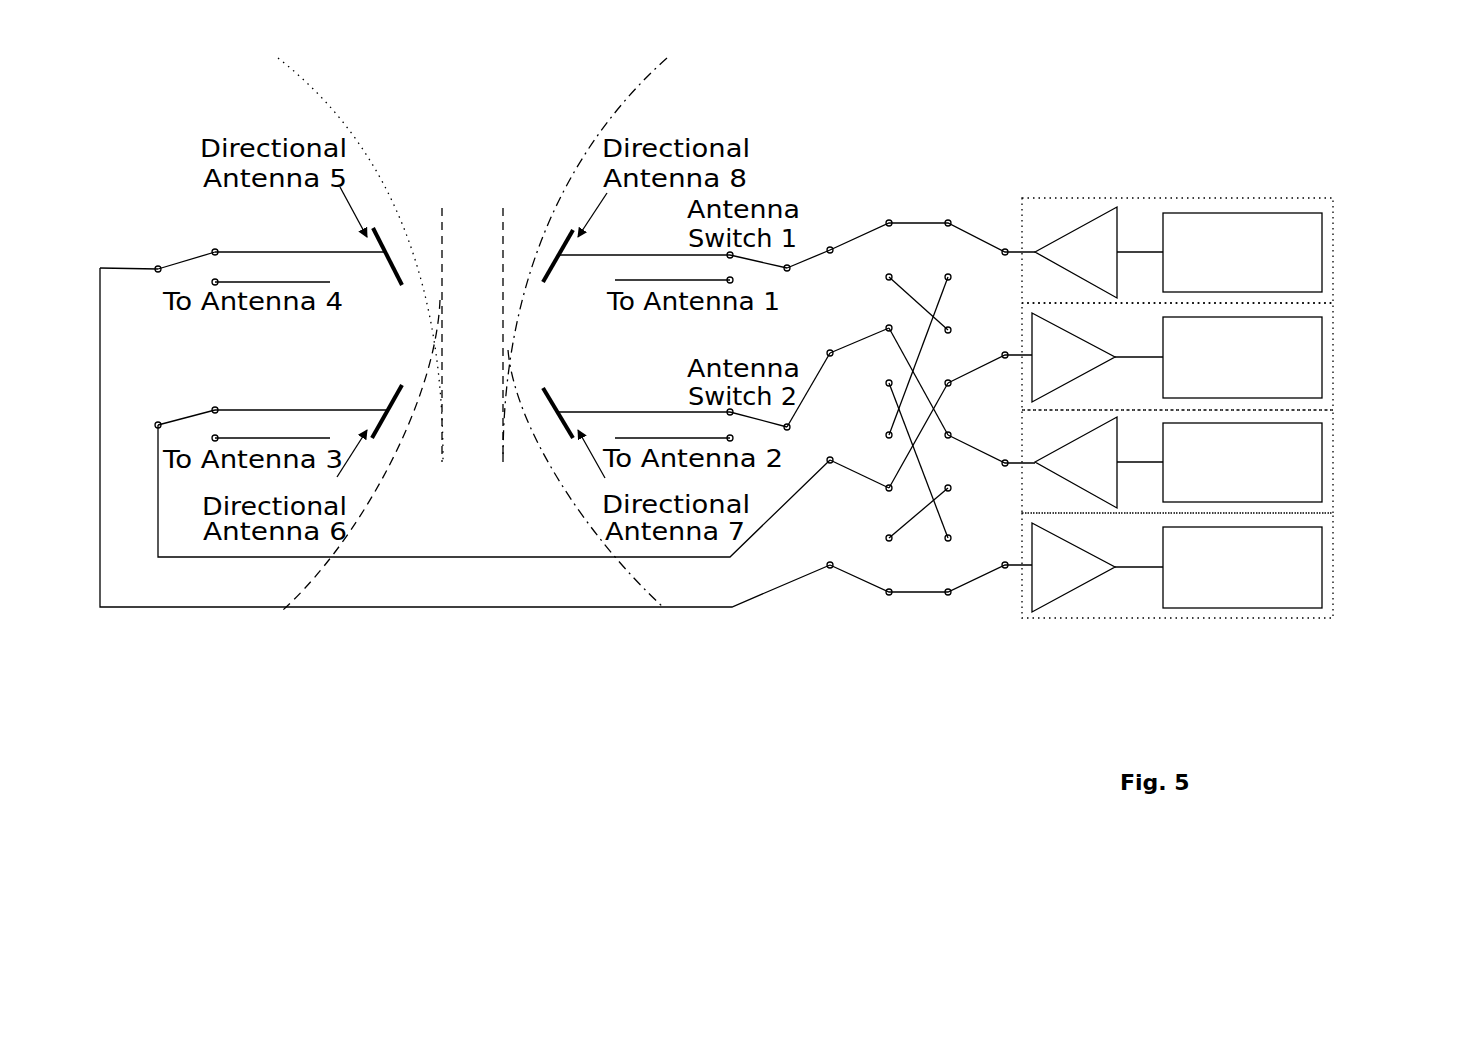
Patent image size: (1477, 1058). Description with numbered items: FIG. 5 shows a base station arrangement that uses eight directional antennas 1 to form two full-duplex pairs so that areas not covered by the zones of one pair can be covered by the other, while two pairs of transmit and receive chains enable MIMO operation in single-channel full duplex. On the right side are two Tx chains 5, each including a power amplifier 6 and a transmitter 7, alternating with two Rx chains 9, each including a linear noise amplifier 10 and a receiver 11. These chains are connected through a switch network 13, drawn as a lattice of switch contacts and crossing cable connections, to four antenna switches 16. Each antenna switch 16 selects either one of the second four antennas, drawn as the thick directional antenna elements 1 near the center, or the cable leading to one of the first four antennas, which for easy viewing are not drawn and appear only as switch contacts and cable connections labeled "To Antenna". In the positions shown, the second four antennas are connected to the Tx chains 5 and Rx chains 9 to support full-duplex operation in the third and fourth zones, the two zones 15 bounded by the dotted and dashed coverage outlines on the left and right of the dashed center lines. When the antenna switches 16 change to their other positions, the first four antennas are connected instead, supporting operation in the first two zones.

The antenna 1 is at (474, 335).
The Tx chain 5 is at (1244, 355).
The power amplifier 6 is at (1099, 357).
The transmitter 7 is at (1242, 357).
The Rx chain 9 is at (1246, 460).
The linear noise amplifier 10 is at (1097, 464).
The receiver 11 is at (1242, 462).
The switch network 13 is at (931, 439).
The zone 15 is at (472, 334).
The antenna switch 16 is at (244, 298).